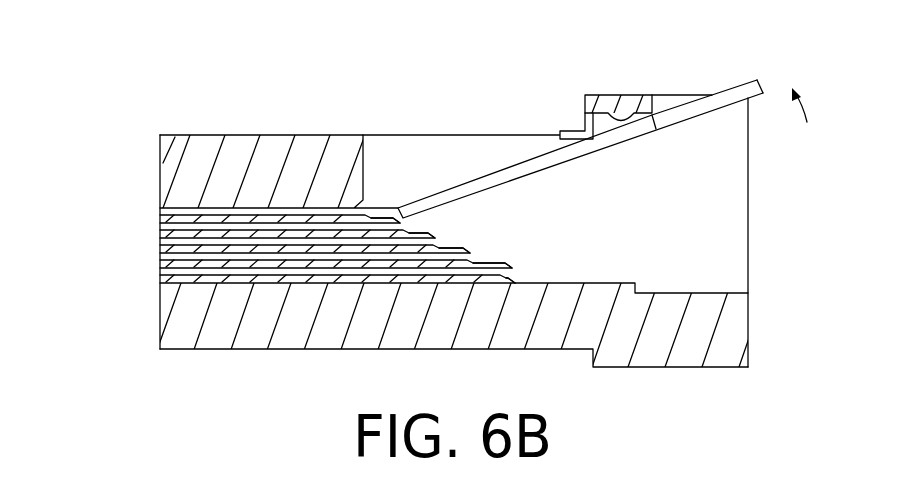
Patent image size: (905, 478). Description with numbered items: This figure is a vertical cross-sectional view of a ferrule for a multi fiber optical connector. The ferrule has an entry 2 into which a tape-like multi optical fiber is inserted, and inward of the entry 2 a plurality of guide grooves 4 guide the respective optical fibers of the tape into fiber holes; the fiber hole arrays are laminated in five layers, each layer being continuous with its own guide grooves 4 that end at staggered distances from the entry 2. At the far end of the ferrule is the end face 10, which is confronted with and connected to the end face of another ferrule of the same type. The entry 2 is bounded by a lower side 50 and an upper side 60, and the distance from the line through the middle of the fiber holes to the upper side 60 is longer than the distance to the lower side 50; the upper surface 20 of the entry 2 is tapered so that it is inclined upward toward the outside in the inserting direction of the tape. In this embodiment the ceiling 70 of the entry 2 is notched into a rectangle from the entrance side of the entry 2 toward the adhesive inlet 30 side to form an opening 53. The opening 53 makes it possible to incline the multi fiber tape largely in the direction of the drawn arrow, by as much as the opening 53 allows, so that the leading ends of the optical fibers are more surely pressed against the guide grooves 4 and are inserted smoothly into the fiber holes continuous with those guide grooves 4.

The entry 2 is at (722, 247).
The guide grooves 4 is at (382, 213).
The end face 10 is at (160, 165).
The upper surface of the entry 20 is at (651, 112).
The adhesive inlet 30 is at (493, 147).
The lower side of the entry 50 is at (748, 293).
The opening 53 is at (735, 80).
The upper side of the entry 60 is at (688, 96).
The ceiling of the entry 70 is at (613, 95).